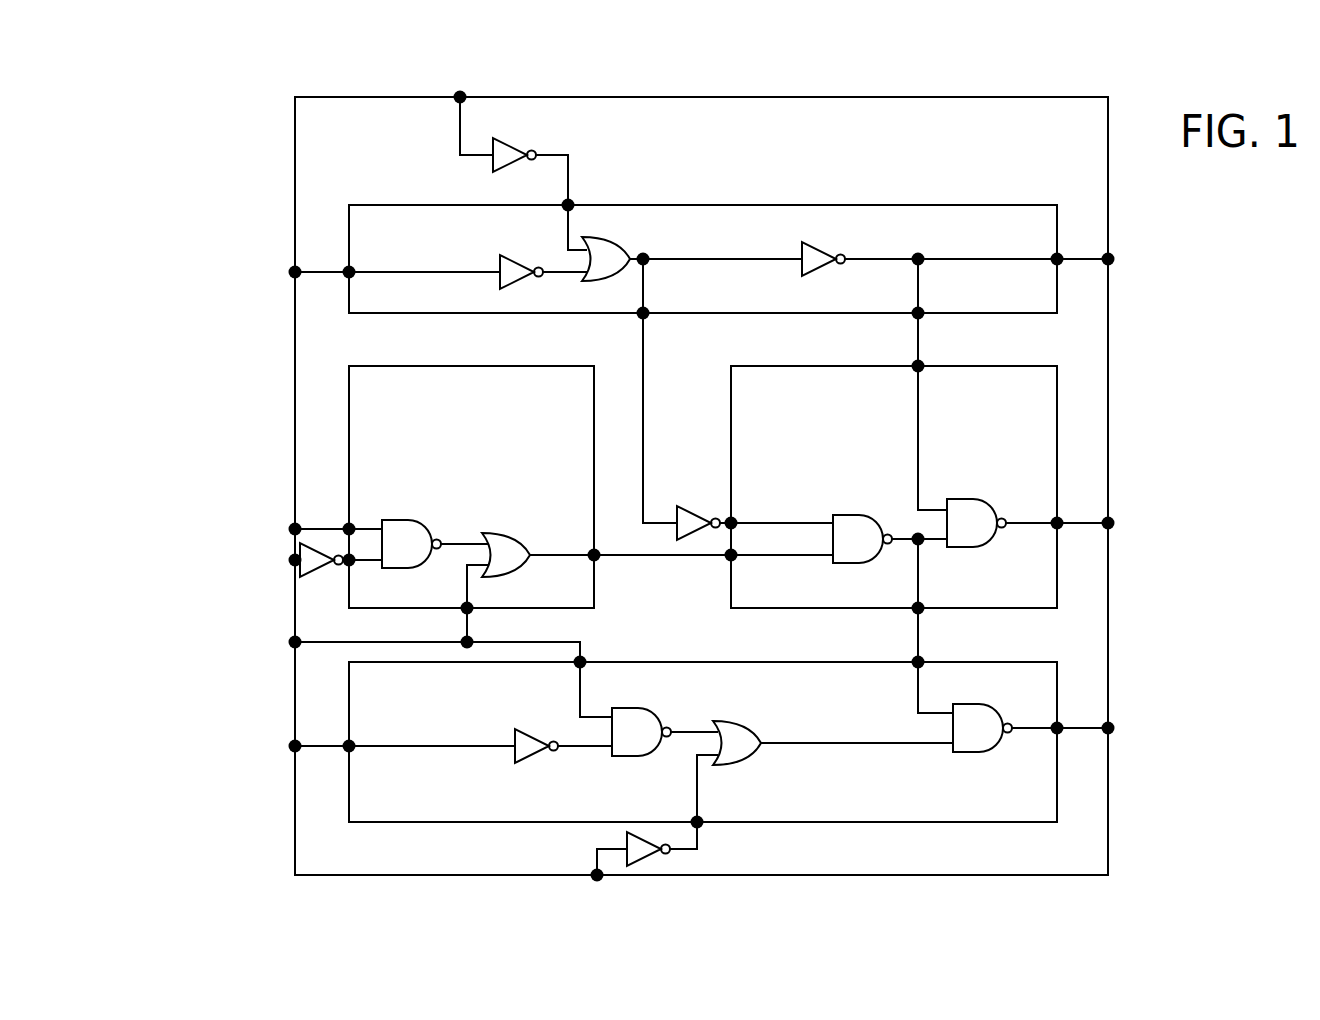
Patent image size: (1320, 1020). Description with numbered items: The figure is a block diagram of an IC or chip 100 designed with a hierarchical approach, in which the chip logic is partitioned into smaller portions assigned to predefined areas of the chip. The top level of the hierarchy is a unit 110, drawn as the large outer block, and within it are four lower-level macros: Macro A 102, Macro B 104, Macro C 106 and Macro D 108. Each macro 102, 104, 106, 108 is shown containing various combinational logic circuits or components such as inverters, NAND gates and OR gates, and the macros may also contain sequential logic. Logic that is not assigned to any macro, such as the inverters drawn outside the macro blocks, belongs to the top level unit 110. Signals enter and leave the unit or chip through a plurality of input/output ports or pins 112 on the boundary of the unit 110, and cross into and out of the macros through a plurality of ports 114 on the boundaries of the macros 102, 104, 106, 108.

The IC or chip 100 is at (203, 161).
The Macro A 102 is at (757, 202).
The Macro B 104 is at (525, 379).
The Macro C 106 is at (847, 378).
The Macro D 108 is at (758, 672).
The unit 110 is at (952, 105).
The input/output ports or pins 112 is at (465, 94).
The ports 114 is at (573, 200).